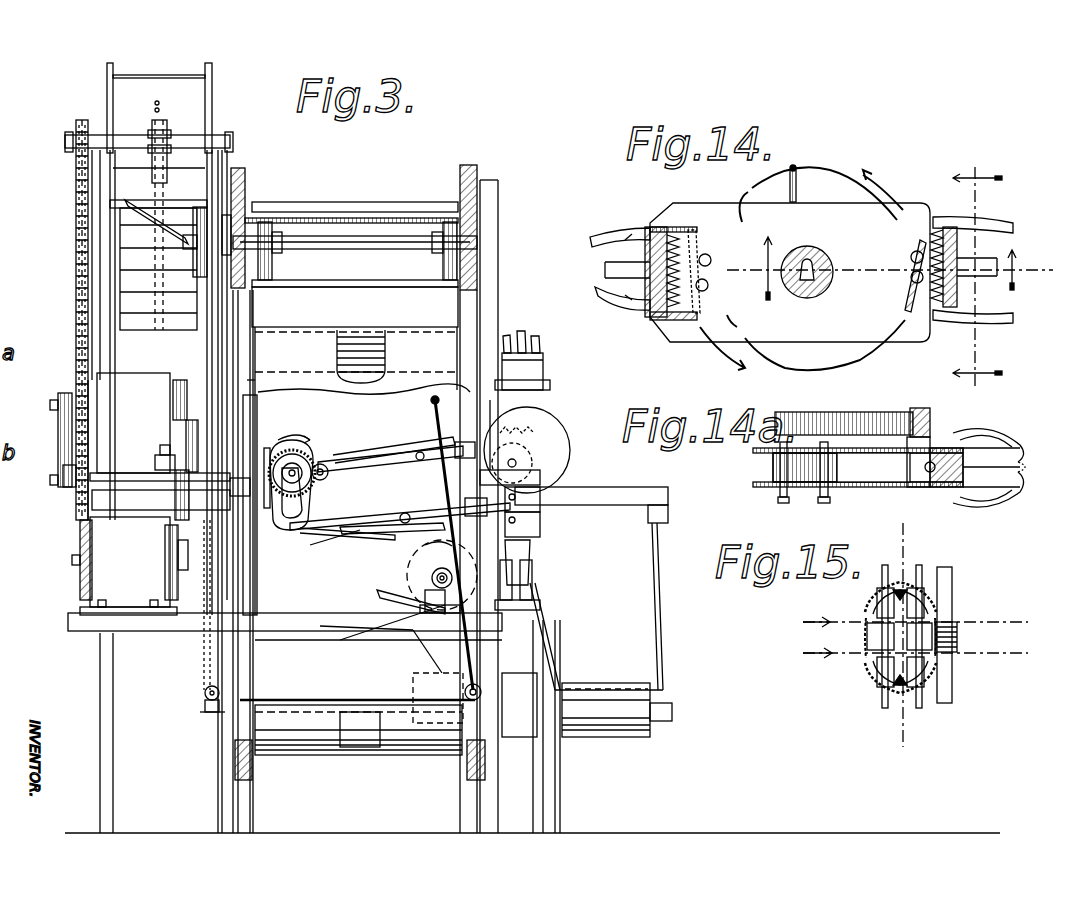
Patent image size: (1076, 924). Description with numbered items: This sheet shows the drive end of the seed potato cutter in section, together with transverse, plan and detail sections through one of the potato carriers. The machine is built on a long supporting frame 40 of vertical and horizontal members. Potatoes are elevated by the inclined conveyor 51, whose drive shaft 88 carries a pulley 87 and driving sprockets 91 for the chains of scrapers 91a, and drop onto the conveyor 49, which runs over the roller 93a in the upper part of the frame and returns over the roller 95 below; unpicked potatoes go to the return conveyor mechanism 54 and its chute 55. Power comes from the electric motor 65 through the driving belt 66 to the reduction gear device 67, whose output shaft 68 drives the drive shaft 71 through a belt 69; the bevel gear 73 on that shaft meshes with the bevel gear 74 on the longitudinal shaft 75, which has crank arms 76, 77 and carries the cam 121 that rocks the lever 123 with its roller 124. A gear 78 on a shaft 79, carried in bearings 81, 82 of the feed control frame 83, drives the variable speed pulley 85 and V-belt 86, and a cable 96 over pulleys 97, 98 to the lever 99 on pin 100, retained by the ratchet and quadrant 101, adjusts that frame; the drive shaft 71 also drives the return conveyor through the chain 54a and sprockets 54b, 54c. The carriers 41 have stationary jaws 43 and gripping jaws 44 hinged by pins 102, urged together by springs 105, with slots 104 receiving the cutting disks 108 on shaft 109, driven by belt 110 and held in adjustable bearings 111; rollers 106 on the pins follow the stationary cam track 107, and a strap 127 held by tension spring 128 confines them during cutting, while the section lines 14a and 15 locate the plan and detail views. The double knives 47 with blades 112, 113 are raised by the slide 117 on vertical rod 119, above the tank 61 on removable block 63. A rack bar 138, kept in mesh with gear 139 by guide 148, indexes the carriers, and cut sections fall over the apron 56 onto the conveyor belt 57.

In FIG. 3, the supporting frame 40 is at (500, 218).
In FIG. 3, the potato carriers 41 is at (550, 395).
In FIG. 14, the potato carriers 41 is at (838, 205).
In FIG. 14A, the potato carriers 41 is at (885, 488).
In FIG. 15, the potato carriers 41 is at (880, 580).
In FIG. 3, the stationary jaws 43 is at (512, 352).
In FIG. 14, the stationary jaws 43 is at (604, 270).
In FIG. 14A, the stationary jaws 43 is at (985, 445).
In FIG. 15, the stationary jaws 43 is at (868, 605).
In FIG. 3, the gripping jaws 44 is at (532, 340).
In FIG. 14, the gripping jaws 44 is at (620, 235).
In FIG. 14A, the gripping jaws 44 is at (1005, 500).
In FIG. 15, the gripping jaws 44 is at (915, 592).
In FIG. 15, the double knives 47 is at (808, 636).
In FIG. 3, the conveyor 49 is at (410, 330).
In FIG. 3, the inclined conveyor 51 is at (405, 215).
In FIG. 3, the inclined return conveyor mechanism 54 is at (180, 148).
In FIG. 3, the chain 54a is at (76, 210).
In FIG. 3, the sprocket 54b is at (63, 478).
In FIG. 3, the sprocket 54c is at (76, 125).
In FIG. 3, the chute 55 is at (167, 222).
In FIG. 3, the apron 56 is at (548, 628).
In FIG. 3, the conveyor belt 57 is at (605, 686).
In FIG. 3, the tank 61 is at (425, 648).
In FIG. 3, the removable block 63 is at (415, 678).
In FIG. 3, the driving electric motor 65 is at (100, 535).
In FIG. 3, the driving belt 66 is at (190, 560).
In FIG. 3, the reduction gear device 67 is at (115, 390).
In FIG. 3, the output shaft 68 is at (60, 403).
In FIG. 3, the belt 69 is at (70, 437).
In FIG. 3, the drive shaft 71 is at (130, 463).
In FIG. 3, the bevel gear 73 is at (272, 455).
In FIG. 3, the bevel gear 74 is at (300, 445).
In FIG. 3, the longitudinally extending shaft 75 is at (296, 468).
In FIG. 3, the crank arm 76 is at (345, 475).
In FIG. 3, the crank arm 77 is at (272, 500).
In FIG. 3, the gear 78 is at (172, 423).
In FIG. 3, the shaft 79 is at (158, 460).
In FIG. 3, the bearing 81 is at (172, 452).
In FIG. 3, the bearing 82 is at (248, 395).
In FIG. 3, the feed control frame 83 is at (182, 482).
In FIG. 3, the variable speed pulley 85 is at (230, 405).
In FIG. 3, the V-belt 86 is at (200, 322).
In FIG. 3, the pulley 87 is at (215, 222).
In FIG. 3, the drive shaft 88 is at (365, 248).
In FIG. 3, the driving sprockets 91 is at (275, 268).
In FIG. 3, the chains of scrapers 91a is at (340, 207).
In FIG. 3, the roller 93a is at (372, 352).
In FIG. 3, the roller 95 is at (370, 752).
In FIG. 3, the cable 96 is at (203, 650).
In FIG. 3, the pulley 97 is at (204, 697).
In FIG. 3, the pulley 98 is at (482, 692).
In FIG. 3, the manually operable lever 99 is at (478, 365).
In FIG. 3, the pin 100 is at (435, 408).
In FIG. 3, the ratchet and quadrant 101 is at (548, 373).
In FIG. 14, the pins 102 is at (672, 235).
In FIG. 14A, the pins 102 is at (841, 472).
In FIG. 14, the slots 104 is at (628, 236).
In FIG. 14A, the slots 104 is at (1025, 460).
In FIG. 15, the slots 104 is at (915, 583).
In FIG. 14, the springs 105 is at (690, 322).
In FIG. 14A, the springs 105 is at (918, 488).
In FIG. 14, the rollers 106 is at (708, 260).
In FIG. 14A, the rollers 106 is at (930, 420).
In FIG. 15, the rollers 106 is at (960, 630).
In FIG. 3, the stationary cam track 107 is at (560, 458).
In FIG. 14, the stationary cam track 107 is at (770, 368).
In FIG. 14A, the stationary cam track 107 is at (858, 406).
In FIG. 15, the stationary cam track 107 is at (955, 598).
In FIG. 3, the cutting disks 108 is at (395, 580).
In FIG. 15, the cutting disks 108 is at (907, 735).
In FIG. 3, the shaft 109 is at (395, 598).
In FIG. 3, the belt 110 is at (360, 535).
In FIG. 3, the adjustable bearings 111 is at (370, 632).
In FIG. 15, the blade 112 is at (810, 620).
In FIG. 15, the blade 113 is at (810, 656).
In FIG. 3, the slide 117 is at (545, 530).
In FIG. 3, the vertical rod 119 is at (535, 570).
In FIG. 3, the cam 121 is at (328, 470).
In FIG. 3, the lever 123 is at (545, 510).
In FIG. 3, the roller 124 is at (330, 555).
In FIG. 3, the strap 127 is at (350, 534).
In FIG. 3, the tension spring 128 is at (400, 520).
In FIG. 3, the rack bar 138 is at (540, 440).
In FIG. 3, the gear 139 is at (535, 480).
In FIG. 3, the guide 148 is at (535, 425).
In FIG. 14, the section line 14a is at (890, 268).
In FIG. 14, the section line 15 is at (977, 276).
In FIG. 14A, the section line 15 is at (960, 418).